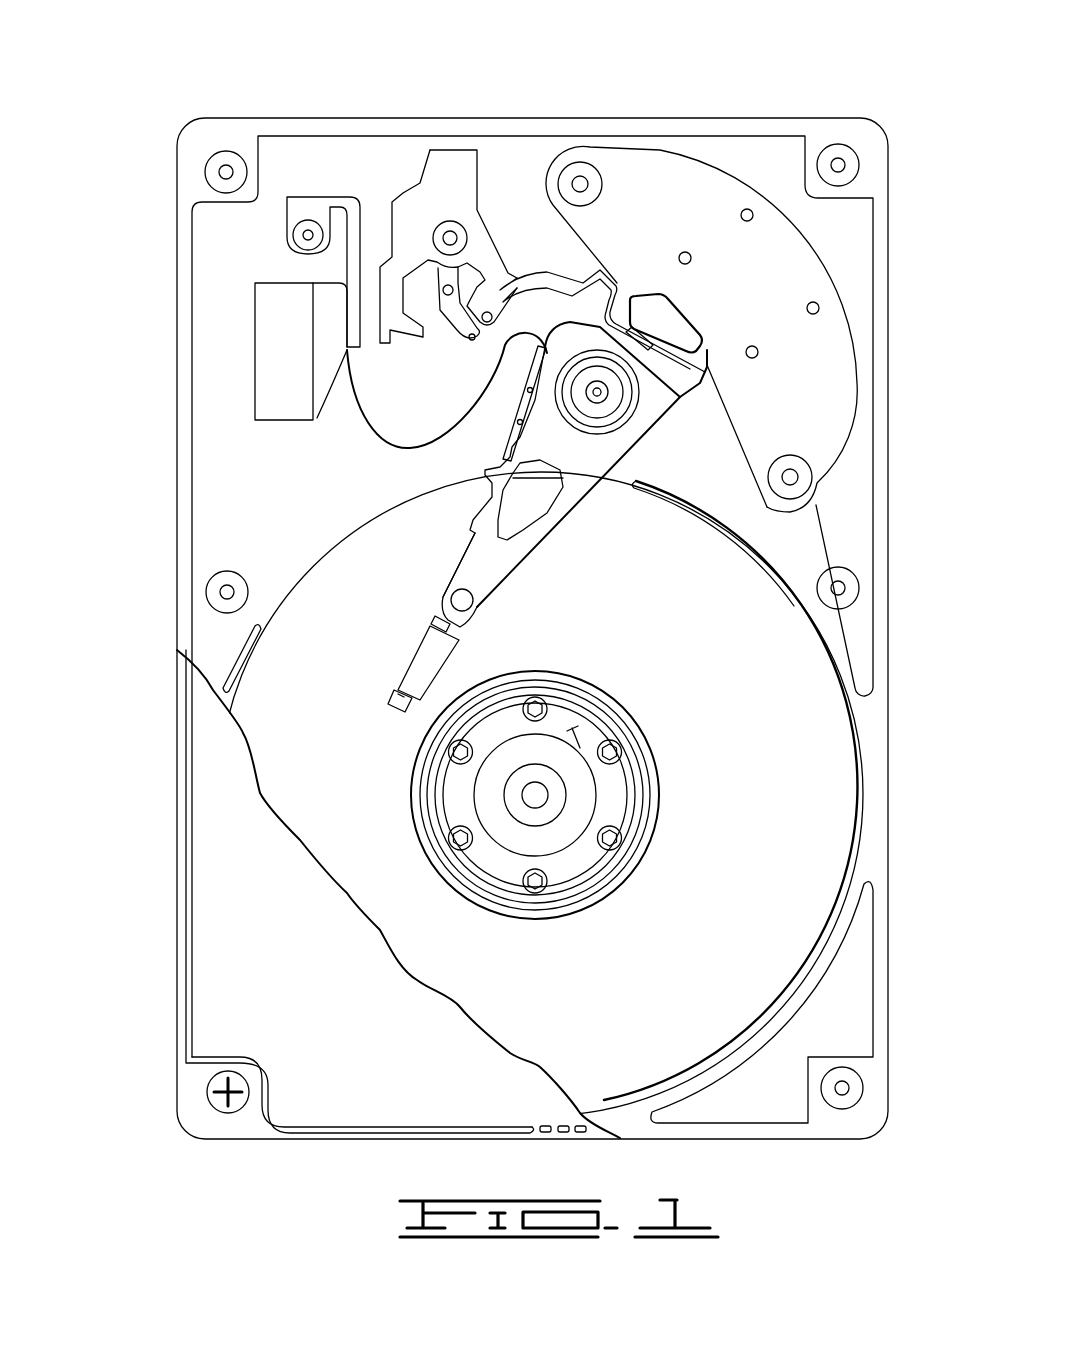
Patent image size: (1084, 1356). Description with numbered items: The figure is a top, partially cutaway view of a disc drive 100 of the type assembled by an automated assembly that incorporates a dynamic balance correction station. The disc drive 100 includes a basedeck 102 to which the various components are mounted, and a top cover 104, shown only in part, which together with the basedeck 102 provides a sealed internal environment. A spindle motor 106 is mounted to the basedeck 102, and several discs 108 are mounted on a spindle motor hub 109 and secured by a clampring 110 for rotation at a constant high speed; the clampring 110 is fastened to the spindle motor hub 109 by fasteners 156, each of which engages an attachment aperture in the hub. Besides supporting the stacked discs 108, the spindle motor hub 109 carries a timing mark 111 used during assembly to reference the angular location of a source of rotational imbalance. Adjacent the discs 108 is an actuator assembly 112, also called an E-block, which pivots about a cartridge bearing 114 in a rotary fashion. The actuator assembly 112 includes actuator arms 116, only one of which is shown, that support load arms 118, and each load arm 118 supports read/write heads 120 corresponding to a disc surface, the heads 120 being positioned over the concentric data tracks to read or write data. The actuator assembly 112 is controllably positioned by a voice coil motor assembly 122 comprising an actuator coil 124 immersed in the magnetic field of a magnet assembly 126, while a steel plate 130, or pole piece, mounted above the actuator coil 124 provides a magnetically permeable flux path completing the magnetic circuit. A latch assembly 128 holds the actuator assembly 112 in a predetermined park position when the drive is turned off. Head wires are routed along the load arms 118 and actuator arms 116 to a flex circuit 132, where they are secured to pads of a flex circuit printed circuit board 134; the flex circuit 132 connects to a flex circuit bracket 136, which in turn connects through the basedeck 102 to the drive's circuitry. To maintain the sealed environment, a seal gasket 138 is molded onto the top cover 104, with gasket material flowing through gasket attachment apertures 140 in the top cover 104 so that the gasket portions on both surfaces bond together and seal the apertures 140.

The disc drive 100 is at (290, 98).
The basedeck 102 is at (272, 482).
The top cover 104 is at (213, 945).
The spindle motor 106 is at (545, 828).
The discs 108 is at (790, 882).
The spindle motor hub 109 is at (605, 793).
The clampring 110 is at (428, 840).
The timing mark 111 is at (596, 745).
The actuator assembly 112 is at (575, 476).
The cartridge bearing 114 is at (607, 407).
The actuator arms 116 is at (471, 577).
The load arms 118 is at (417, 660).
The read/write heads 120 is at (393, 690).
The voice coil motor assembly 122 is at (842, 244).
The actuator coil 124 is at (622, 296).
The magnet assembly 126 is at (610, 170).
The latch assembly 128 is at (452, 170).
The steel plate 130 is at (730, 190).
The flex circuit 132 is at (383, 452).
The flex circuit printed circuit board 134 is at (500, 433).
The flex circuit bracket 136 is at (252, 352).
The seal gasket 138 is at (182, 745).
The gasket attachment apertures 140 is at (555, 1133).
The fasteners 156 is at (534, 700).